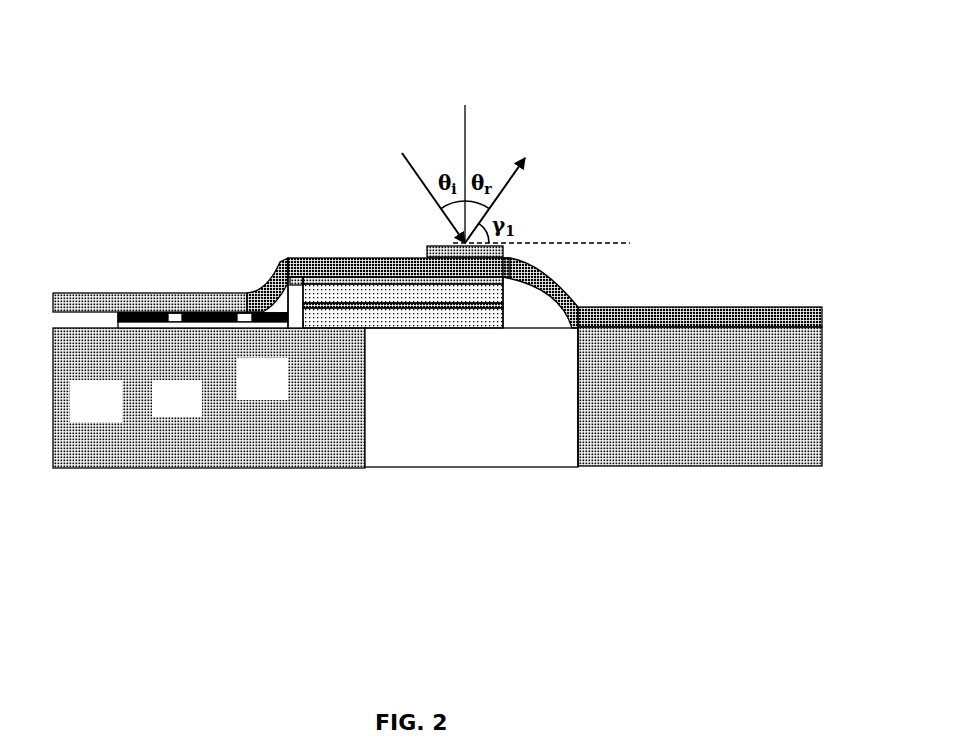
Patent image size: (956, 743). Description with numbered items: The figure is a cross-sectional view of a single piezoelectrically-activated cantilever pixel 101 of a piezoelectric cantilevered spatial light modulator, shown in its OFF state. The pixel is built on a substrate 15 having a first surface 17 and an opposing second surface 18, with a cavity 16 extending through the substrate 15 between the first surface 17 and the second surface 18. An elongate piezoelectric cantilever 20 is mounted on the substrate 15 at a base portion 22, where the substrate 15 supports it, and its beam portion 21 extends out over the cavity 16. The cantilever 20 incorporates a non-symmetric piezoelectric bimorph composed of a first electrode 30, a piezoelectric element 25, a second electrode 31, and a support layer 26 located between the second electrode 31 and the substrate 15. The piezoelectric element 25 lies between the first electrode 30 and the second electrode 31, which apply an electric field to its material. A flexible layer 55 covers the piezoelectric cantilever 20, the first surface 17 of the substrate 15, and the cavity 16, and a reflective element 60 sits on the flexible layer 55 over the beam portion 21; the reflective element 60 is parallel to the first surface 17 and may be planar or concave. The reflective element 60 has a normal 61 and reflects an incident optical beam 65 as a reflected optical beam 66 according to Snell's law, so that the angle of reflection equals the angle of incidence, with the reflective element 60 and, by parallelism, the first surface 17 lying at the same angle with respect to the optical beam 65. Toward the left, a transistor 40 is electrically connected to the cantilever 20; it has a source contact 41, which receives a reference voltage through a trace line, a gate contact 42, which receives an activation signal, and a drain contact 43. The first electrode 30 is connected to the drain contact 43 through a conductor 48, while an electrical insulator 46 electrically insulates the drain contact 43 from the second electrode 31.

The piezoelectric cantilever 20 is at (400, 82).
The base portion 22 is at (333, 145).
The piezoelectrically-activated cantilever pixel 101 is at (442, 533).
The substrate 15 is at (658, 448).
The cavity 16 is at (547, 443).
The first surface 17 is at (75, 332).
The second surface 18 is at (103, 470).
The beam portion 21 is at (433, 388).
The piezoelectric element 25 is at (390, 292).
The support layer 26 is at (488, 318).
The first electrode 30 is at (317, 283).
The second electrode 31 is at (452, 300).
The transistor 40 is at (157, 328).
The source contact 41 is at (128, 312).
The gate contact 42 is at (203, 312).
The drain contact 43 is at (270, 288).
The electrical insulator 46 is at (298, 323).
The conductor 48 is at (270, 310).
The flexible layer 55 is at (747, 317).
The reflective element 60 is at (437, 250).
The normal 61 is at (465, 123).
The optical beam 65 is at (418, 175).
The optical beam 66 is at (497, 200).